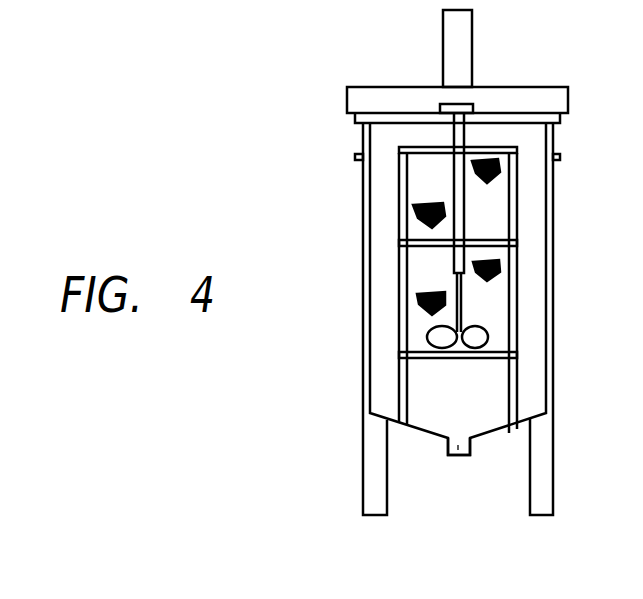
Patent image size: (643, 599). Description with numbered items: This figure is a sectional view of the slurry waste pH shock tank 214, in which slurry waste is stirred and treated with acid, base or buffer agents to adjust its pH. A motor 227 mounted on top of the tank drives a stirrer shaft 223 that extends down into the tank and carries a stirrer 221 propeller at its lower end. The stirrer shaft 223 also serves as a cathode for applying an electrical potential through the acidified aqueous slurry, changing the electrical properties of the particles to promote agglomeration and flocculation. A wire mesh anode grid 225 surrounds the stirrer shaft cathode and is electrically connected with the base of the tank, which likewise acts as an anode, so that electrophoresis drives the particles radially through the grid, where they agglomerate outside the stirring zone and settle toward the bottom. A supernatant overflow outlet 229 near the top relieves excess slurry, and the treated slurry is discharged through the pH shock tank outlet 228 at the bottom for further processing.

The slurry waste pH shock tank 214 is at (540, 260).
The stirrer 221 is at (481, 335).
The stirrer shaft 223 is at (463, 222).
The wire mesh anode grid 225 is at (420, 213).
The motor 227 is at (475, 53).
The pH shock tank outlet 228 is at (459, 455).
The supernatant overflow outlet 229 is at (357, 160).